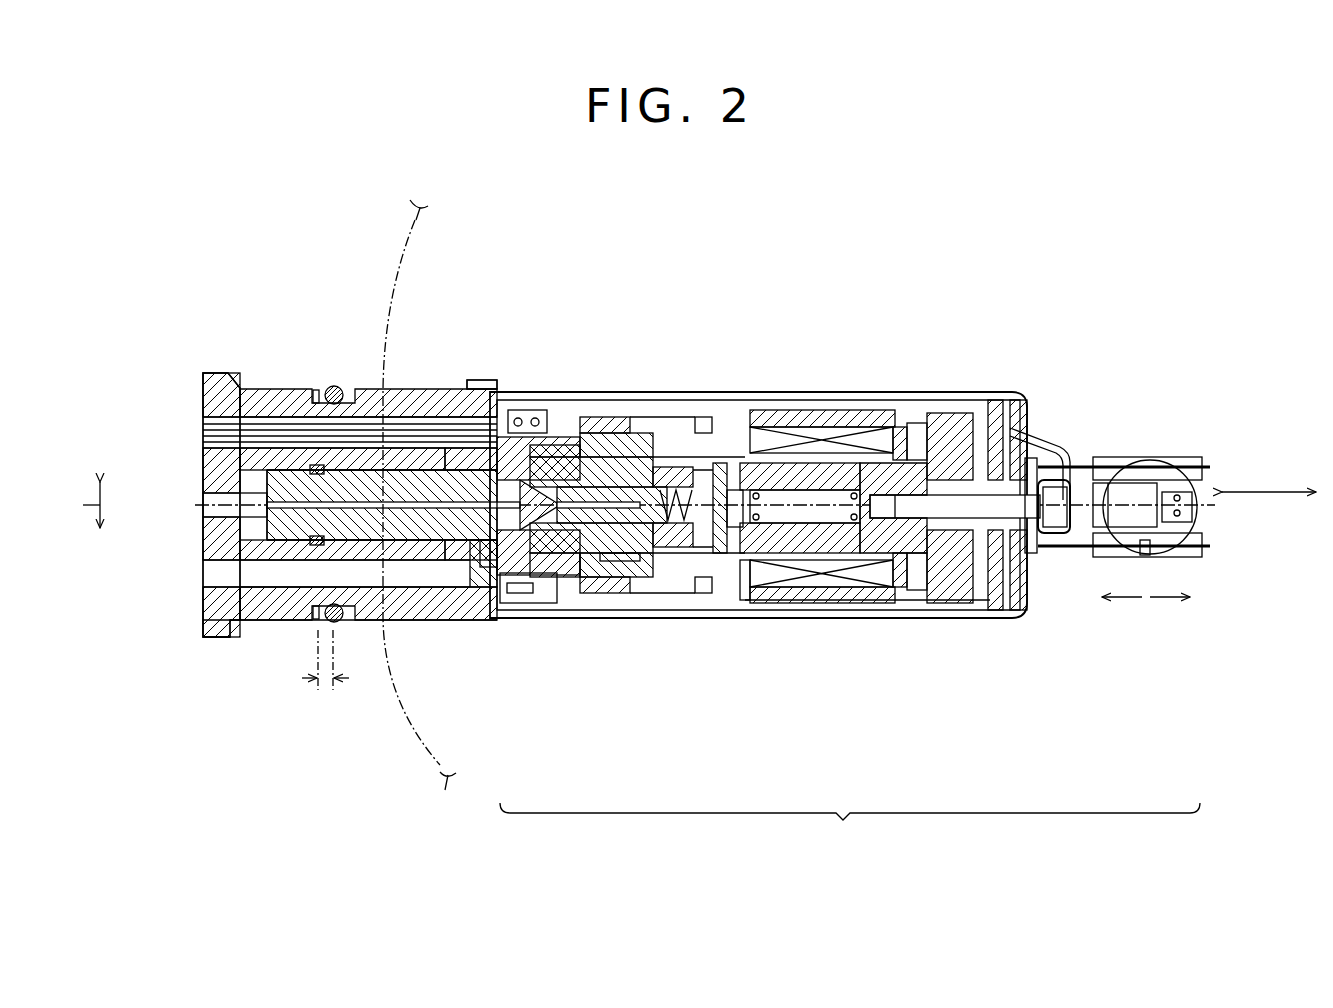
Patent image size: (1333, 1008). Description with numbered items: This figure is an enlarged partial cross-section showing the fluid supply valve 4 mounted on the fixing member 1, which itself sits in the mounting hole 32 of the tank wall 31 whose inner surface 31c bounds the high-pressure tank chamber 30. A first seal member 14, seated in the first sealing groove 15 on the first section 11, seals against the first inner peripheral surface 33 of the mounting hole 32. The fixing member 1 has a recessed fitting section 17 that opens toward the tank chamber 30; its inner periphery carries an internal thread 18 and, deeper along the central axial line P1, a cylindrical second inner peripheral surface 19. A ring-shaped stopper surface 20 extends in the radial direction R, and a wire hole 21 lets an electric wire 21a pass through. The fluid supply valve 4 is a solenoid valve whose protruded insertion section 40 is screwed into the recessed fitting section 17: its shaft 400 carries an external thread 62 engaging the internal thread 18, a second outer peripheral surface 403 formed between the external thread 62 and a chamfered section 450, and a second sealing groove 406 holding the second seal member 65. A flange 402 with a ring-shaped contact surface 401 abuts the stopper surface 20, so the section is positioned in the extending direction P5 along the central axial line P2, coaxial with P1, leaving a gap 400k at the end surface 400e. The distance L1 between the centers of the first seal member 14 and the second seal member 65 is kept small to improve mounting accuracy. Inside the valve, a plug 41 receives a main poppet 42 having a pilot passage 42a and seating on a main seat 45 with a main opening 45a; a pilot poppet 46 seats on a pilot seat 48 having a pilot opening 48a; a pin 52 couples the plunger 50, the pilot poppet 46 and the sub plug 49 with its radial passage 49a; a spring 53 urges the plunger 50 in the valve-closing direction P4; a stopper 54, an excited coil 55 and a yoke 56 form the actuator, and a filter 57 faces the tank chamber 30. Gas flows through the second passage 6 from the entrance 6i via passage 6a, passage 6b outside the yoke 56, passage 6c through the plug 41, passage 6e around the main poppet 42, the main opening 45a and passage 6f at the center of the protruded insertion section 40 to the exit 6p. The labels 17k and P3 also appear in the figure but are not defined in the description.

The fixing member 1 is at (215, 640).
The fluid supply valve 4 is at (850, 828).
The second passage 6 is at (800, 392).
The passage 6a is at (1010, 400).
The passage 6b is at (836, 400).
The passage 6c is at (662, 455).
The passage 6e is at (610, 418).
The passage 6f is at (470, 600).
The entrance 6i is at (1026, 424).
The exit 6p is at (290, 600).
The first section 11 is at (243, 640).
The first seal member 14 is at (334, 387).
The first sealing groove 15 is at (318, 392).
The recessed fitting section 17 is at (392, 580).
The sleeve 17k is at (203, 478).
The internal thread 18 is at (484, 390).
The second inner peripheral surface 19 is at (362, 392).
The stopper surface 20 is at (520, 437).
The wire hole 21 is at (203, 428).
The electric wire 21a is at (203, 435).
The tank chamber 30 is at (1117, 455).
The tank wall 31 is at (400, 258).
The inner surface 31c is at (428, 228).
The mounting hole 32 is at (200, 385).
The first inner peripheral surface 33 is at (221, 505).
The protruded insertion section 40 is at (470, 395).
The plug 41 is at (590, 460).
The main poppet 42 is at (640, 490).
The pilot passage 42a is at (605, 562).
The main seat 45 is at (585, 578).
The main opening 45a is at (550, 578).
The pilot poppet 46 is at (700, 467).
The pilot seat 48 is at (720, 555).
The pilot opening 48a is at (665, 553).
The sub plug 49 is at (760, 463).
The passage 49a is at (682, 488).
The plunger 50 is at (775, 602).
The pin 52 is at (740, 555).
The spring 53 is at (880, 463).
The stopper 54 is at (945, 600).
The excited coil 55 is at (885, 428).
The yoke 56 is at (940, 413).
The filter 57 is at (998, 606).
The external thread 62 is at (482, 384).
The second seal member 65 is at (316, 465).
The shaft 400 is at (455, 485).
The end surface 400e is at (203, 552).
The gap 400k is at (268, 540).
The contact surface 401 is at (508, 410).
The flange 402 is at (555, 457).
The second outer peripheral surface 403 is at (272, 470).
The second sealing groove 406 is at (300, 467).
The chamfered section 450 is at (247, 392).
The distance L1 is at (325, 703).
The central axial line P1 is at (203, 496).
The central axial line P2 is at (1210, 505).
The direction P3 is at (1165, 610).
The valve-closing direction P4 is at (1125, 610).
The extending direction P5 is at (1268, 490).
The radial direction R is at (77, 505).